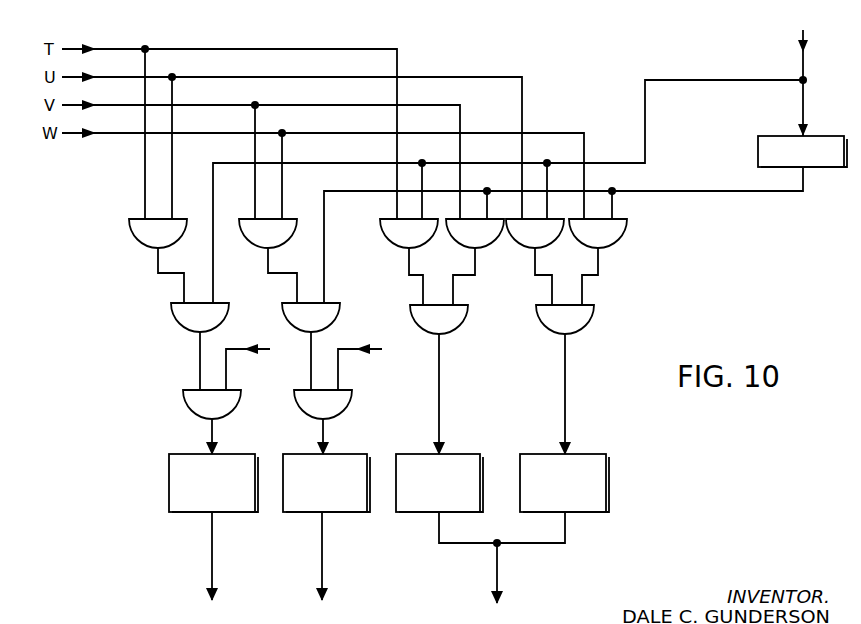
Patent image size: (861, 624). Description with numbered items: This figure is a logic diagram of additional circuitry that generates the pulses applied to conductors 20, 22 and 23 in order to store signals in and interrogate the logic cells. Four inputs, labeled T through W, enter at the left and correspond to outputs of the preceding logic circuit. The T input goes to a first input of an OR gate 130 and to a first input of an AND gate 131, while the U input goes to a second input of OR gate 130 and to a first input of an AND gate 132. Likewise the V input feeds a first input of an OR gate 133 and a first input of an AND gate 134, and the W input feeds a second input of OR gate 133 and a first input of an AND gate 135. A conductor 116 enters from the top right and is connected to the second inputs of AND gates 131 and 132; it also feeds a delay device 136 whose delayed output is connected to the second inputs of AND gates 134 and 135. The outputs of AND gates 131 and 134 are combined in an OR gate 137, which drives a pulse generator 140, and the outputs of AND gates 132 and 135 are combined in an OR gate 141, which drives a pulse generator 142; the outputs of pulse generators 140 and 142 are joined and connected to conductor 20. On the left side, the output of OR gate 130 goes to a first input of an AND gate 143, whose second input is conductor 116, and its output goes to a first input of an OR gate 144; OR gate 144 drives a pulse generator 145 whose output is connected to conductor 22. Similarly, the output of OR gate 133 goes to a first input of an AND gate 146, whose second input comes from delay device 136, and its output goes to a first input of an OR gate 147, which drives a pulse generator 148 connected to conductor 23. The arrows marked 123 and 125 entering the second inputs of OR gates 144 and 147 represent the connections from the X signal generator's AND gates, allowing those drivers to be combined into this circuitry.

The conductor 116 is at (829, 80).
The delay device 136 is at (822, 136).
The OR gate 130 is at (129, 226).
The OR gate 133 is at (243, 236).
The AND gate 131 is at (384, 237).
The AND gate 134 is at (451, 238).
The AND gate 132 is at (512, 238).
The AND gate 135 is at (621, 238).
The AND gate 143 is at (172, 313).
The AND gate 146 is at (334, 309).
The OR gate 137 is at (463, 327).
The OR gate 141 is at (590, 327).
The input 123 is at (258, 349).
The input 125 is at (369, 349).
The OR gate 144 is at (184, 401).
The OR gate 147 is at (351, 401).
The pulse generator 145 is at (230, 454).
The pulse generator 148 is at (342, 454).
The pulse generator 140 is at (458, 454).
The pulse generator 142 is at (585, 454).
The conductor 22 is at (204, 592).
The conductor 23 is at (314, 592).
The conductor 20 is at (492, 597).